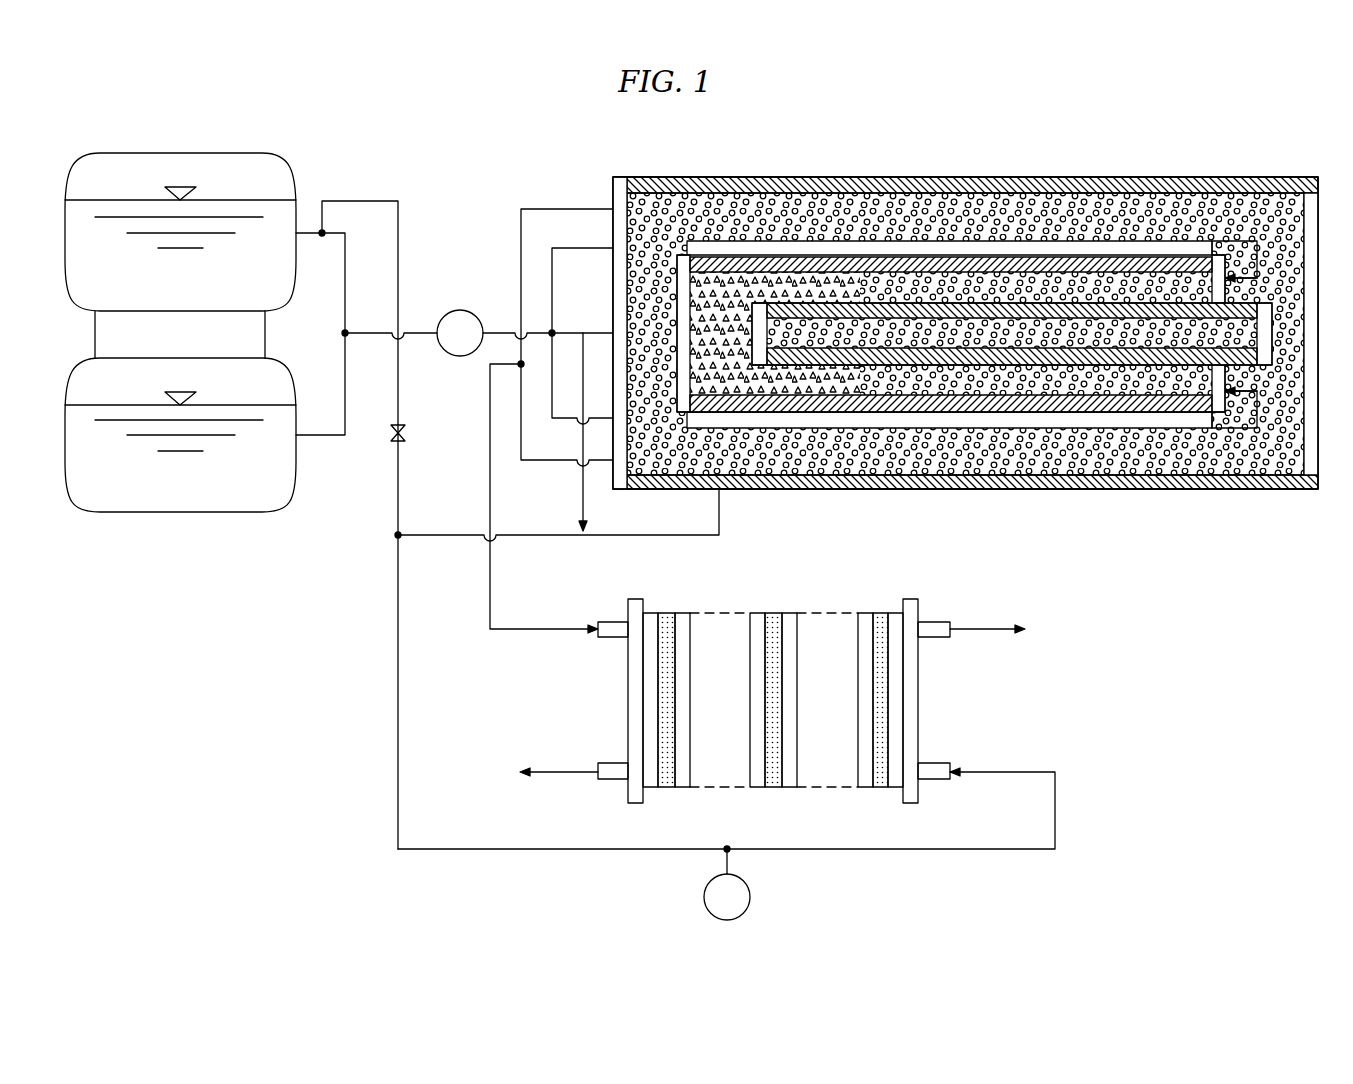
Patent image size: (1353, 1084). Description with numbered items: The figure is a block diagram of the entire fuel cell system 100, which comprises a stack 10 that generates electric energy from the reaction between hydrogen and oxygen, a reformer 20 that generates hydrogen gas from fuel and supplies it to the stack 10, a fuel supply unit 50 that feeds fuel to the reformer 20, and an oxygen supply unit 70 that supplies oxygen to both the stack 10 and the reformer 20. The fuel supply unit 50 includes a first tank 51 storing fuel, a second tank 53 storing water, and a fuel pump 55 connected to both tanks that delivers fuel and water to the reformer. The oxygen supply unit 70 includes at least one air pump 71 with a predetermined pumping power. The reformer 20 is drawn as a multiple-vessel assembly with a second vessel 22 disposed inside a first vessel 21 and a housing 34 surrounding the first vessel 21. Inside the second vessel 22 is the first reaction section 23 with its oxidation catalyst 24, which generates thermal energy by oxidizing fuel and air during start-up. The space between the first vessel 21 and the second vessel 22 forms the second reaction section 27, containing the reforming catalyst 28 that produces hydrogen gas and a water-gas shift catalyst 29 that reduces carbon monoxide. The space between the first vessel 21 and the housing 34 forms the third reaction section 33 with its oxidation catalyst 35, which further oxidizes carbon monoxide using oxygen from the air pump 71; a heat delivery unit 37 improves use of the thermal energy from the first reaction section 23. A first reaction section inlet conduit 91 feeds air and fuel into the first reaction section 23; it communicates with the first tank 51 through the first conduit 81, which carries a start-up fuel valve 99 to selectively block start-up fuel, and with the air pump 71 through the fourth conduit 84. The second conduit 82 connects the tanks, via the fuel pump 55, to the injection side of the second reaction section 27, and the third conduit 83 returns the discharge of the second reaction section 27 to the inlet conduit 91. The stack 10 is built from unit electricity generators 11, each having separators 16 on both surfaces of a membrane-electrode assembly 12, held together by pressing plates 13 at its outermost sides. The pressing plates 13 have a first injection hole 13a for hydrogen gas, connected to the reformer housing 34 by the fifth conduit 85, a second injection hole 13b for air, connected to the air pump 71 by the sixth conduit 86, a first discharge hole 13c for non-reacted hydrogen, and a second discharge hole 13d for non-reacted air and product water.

The fuel cell system 100 is at (452, 129).
The stack 10 is at (866, 580).
The unit electricity generator 11 is at (745, 564).
The membrane-electrode assembly 12 is at (774, 613).
The separator 16 is at (752, 613).
The pressing plate 13 is at (628, 692).
The first injection hole 13a is at (613, 622).
The second injection hole 13b is at (932, 780).
The first discharge hole 13c is at (940, 622).
The second discharge hole 13d is at (616, 780).
The reformer 20 is at (1280, 166).
The first vessel 21 is at (803, 262).
The second vessel 22 is at (968, 310).
The first reaction section 23 is at (955, 142).
The oxidation catalyst 24 is at (1005, 320).
The second reaction section 27 is at (795, 142).
The reforming catalyst 28 is at (872, 277).
The water-gas shift catalyst 29 is at (833, 283).
The third reaction section 33 is at (1122, 556).
The housing 34 is at (1177, 478).
The oxidation catalyst 35 is at (1133, 462).
The heat delivery unit 37 is at (1065, 200).
The fuel supply unit 50 is at (128, 556).
The first tank 51 is at (180, 153).
The second tank 53 is at (183, 512).
The fuel pump 55 is at (470, 311).
The oxygen supply unit 70 is at (692, 908).
The air pump 71 is at (750, 897).
The first conduit 81 is at (362, 201).
The second conduit 82 is at (370, 335).
The third conduit 83 is at (588, 518).
The fourth conduit 84 is at (398, 708).
The fifth conduit 85 is at (490, 586).
The sixth conduit 86 is at (990, 849).
The first reaction section inlet conduit 91 is at (668, 538).
The start-up fuel valve 99 is at (390, 443).